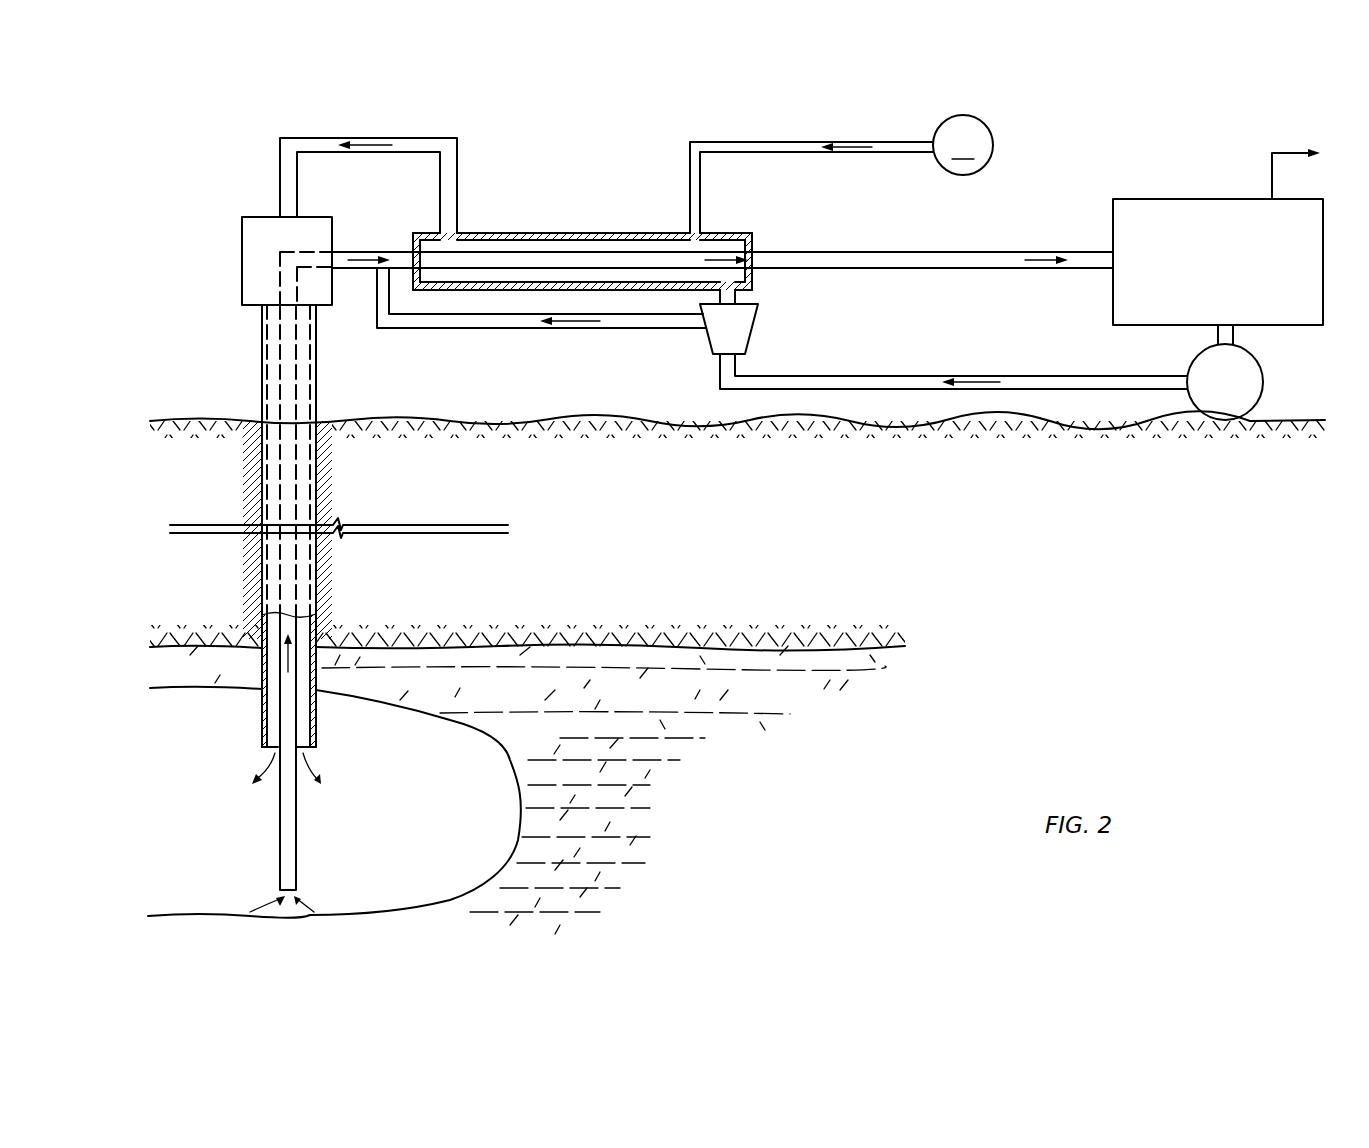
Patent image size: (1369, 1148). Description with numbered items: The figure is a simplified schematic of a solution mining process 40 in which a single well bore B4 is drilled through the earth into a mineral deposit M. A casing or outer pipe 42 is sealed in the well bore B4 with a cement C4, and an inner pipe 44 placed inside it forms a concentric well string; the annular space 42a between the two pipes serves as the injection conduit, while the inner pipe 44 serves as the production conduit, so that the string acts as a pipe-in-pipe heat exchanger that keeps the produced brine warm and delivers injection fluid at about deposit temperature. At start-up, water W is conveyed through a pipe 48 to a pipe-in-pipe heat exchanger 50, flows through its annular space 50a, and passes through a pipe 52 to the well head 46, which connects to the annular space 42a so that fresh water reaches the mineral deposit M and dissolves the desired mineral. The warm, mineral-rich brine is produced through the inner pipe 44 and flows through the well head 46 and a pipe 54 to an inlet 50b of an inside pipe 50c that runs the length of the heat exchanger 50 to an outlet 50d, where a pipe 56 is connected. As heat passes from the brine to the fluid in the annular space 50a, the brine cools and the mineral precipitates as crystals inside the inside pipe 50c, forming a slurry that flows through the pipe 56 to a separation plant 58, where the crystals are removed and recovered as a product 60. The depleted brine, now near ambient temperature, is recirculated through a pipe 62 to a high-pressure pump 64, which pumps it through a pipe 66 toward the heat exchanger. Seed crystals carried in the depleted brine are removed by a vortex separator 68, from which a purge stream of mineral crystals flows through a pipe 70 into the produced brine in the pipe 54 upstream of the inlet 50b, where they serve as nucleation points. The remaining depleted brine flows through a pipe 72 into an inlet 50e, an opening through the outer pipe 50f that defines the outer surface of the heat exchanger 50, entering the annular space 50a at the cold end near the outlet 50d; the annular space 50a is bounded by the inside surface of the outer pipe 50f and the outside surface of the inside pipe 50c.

The solution mining process 40 is at (992, 582).
The outer pipe 42 is at (320, 725).
The annular space 42a is at (305, 752).
The inner pipe 44 is at (298, 838).
The well head 46 is at (242, 240).
The pipe 48 is at (792, 142).
The pipe-in-pipe heat exchanger 50 is at (550, 240).
The annular space 50a is at (608, 245).
The inlet 50b is at (413, 250).
The inside pipe 50c is at (494, 247).
The outlet 50d is at (753, 248).
The inlet 50e is at (718, 290).
The outer pipe 50f is at (718, 233).
The pipe 52 is at (458, 155).
The pipe 54 is at (352, 252).
The pipe 56 is at (860, 252).
The separation plant 58 is at (1168, 199).
The product 60 is at (1284, 152).
The pipe 62 is at (1235, 333).
The high-pressure pump 64 is at (1264, 386).
The pipe 66 is at (980, 376).
The vortex separator 68 is at (755, 333).
The pipe 70 is at (498, 330).
The pipe 72 is at (742, 298).
The well bore B4 is at (327, 480).
The cement C4 is at (332, 552).
The mineral deposit M is at (452, 806).
The water W is at (963, 145).